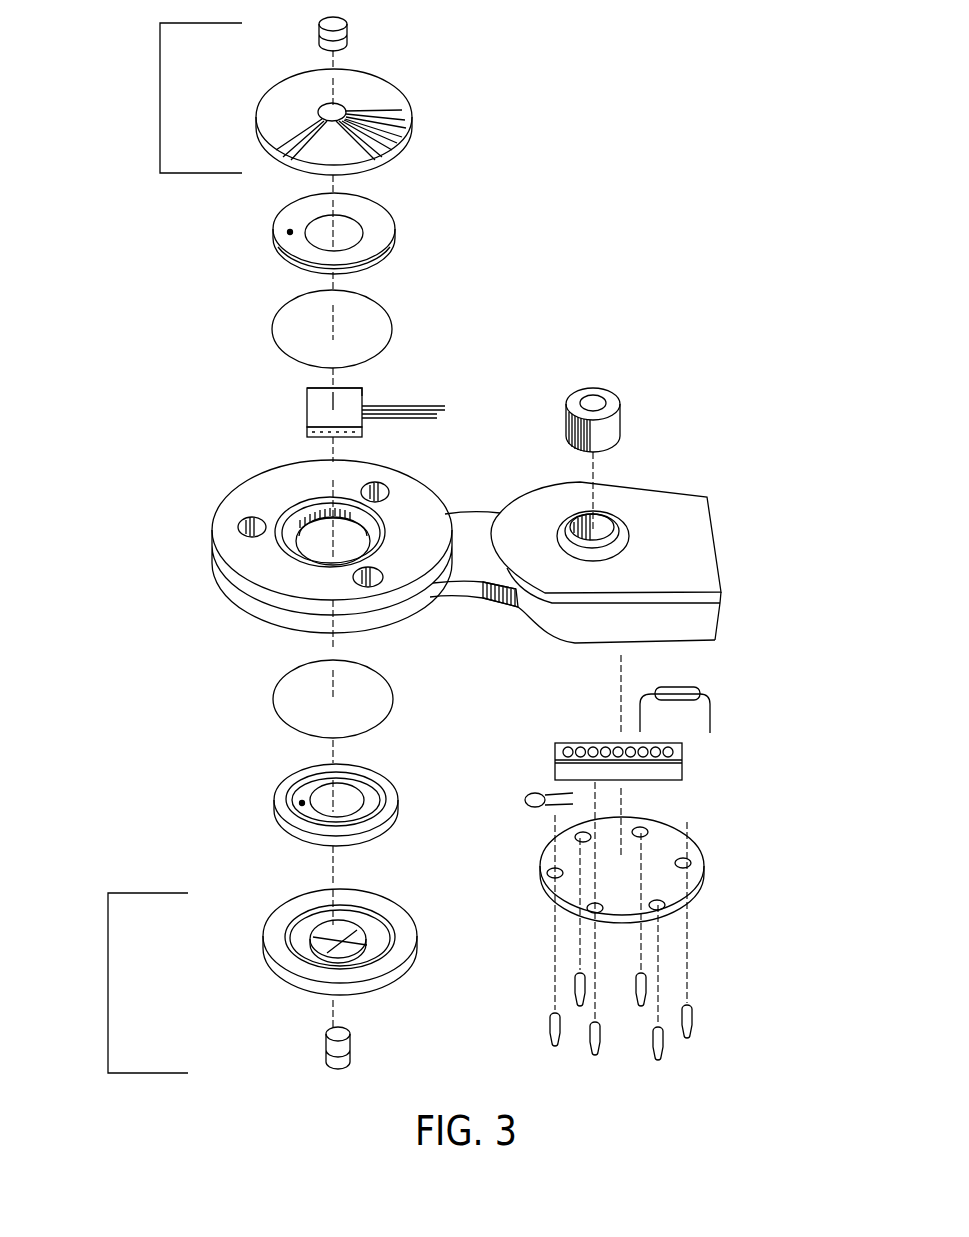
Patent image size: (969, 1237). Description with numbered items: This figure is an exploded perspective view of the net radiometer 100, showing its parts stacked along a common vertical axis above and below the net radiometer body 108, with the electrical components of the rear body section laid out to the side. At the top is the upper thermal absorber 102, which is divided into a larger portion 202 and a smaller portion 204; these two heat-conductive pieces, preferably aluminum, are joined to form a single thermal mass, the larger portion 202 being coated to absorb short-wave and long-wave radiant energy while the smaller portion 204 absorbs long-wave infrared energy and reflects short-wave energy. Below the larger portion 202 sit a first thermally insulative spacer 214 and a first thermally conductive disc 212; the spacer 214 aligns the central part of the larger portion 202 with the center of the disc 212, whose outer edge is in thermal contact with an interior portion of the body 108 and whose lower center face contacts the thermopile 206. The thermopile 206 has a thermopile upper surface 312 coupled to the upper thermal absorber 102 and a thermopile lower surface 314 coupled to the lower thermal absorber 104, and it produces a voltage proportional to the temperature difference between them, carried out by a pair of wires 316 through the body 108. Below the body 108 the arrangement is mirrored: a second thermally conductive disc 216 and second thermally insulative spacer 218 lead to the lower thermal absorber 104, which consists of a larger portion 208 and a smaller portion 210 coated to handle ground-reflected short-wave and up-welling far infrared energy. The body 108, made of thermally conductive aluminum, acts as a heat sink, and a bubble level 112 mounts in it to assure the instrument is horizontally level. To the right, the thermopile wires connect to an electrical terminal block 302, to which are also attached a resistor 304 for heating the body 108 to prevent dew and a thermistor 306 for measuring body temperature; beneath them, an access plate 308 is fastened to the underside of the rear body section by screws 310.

The net radiometer 100 is at (50, 253).
The upper thermal absorber 102 is at (176, 98).
The lower thermal absorber 104 is at (122, 983).
The net radiometer body 108 is at (212, 545).
The bubble level 112 is at (622, 410).
The larger portion 202 is at (412, 125).
The smaller portion 204 is at (318, 36).
The thermopile 206 is at (377, 413).
The larger portion 208 is at (262, 955).
The smaller portion 210 is at (352, 1052).
The first thermally conductive disc 212 is at (272, 332).
The first thermally insulative spacer 214 is at (395, 242).
The second thermally conductive disc 216 is at (272, 705).
The second thermally insulative spacer 218 is at (277, 812).
The electrical terminal block 302 is at (553, 763).
The resistor 304 is at (715, 712).
The thermistor 306 is at (525, 803).
The access plate 308 is at (705, 860).
The screws 310 is at (700, 1022).
The thermopile upper surface 312 is at (363, 396).
The thermopile lower surface 314 is at (362, 432).
The pair of wires 316 is at (450, 412).